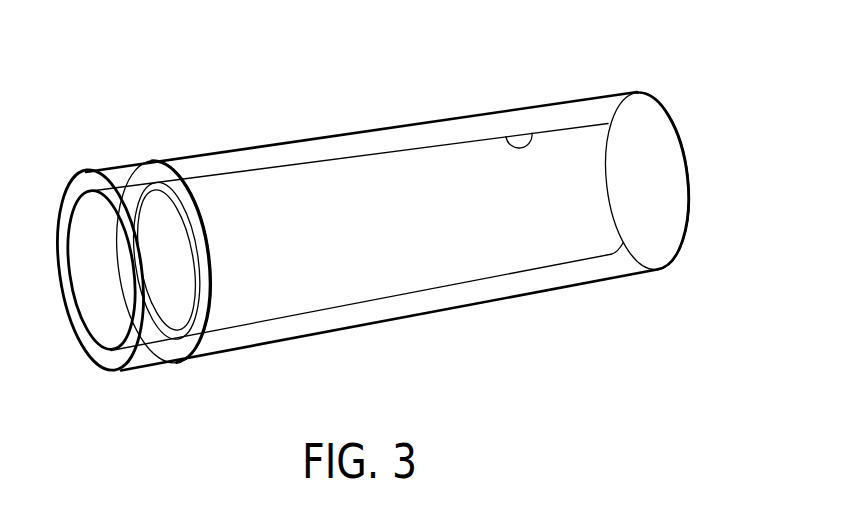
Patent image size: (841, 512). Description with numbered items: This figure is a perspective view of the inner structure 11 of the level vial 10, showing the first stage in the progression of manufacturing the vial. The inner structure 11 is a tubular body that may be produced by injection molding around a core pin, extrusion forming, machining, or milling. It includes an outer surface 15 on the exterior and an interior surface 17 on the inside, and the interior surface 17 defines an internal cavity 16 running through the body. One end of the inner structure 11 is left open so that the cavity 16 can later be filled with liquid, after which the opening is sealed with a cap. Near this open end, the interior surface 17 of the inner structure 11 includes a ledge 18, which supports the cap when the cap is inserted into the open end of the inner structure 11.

The level vial 10 is at (156, 133).
The inner structure 11 is at (370, 147).
The outer surface 15 is at (263, 148).
The internal cavity 16 is at (417, 252).
The interior surface 17 is at (528, 128).
The ledge 18 is at (187, 348).